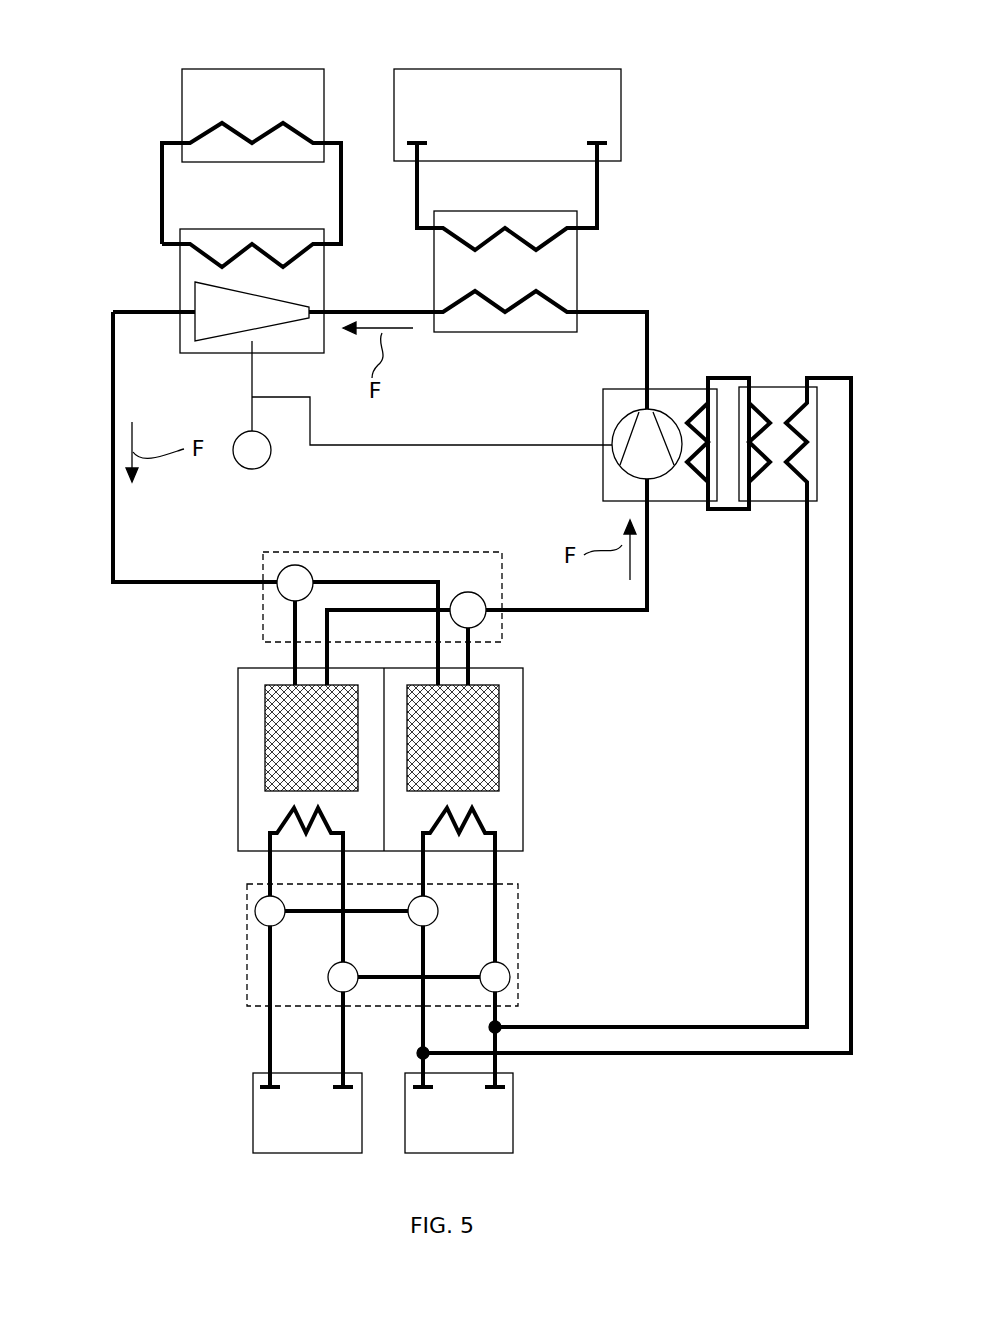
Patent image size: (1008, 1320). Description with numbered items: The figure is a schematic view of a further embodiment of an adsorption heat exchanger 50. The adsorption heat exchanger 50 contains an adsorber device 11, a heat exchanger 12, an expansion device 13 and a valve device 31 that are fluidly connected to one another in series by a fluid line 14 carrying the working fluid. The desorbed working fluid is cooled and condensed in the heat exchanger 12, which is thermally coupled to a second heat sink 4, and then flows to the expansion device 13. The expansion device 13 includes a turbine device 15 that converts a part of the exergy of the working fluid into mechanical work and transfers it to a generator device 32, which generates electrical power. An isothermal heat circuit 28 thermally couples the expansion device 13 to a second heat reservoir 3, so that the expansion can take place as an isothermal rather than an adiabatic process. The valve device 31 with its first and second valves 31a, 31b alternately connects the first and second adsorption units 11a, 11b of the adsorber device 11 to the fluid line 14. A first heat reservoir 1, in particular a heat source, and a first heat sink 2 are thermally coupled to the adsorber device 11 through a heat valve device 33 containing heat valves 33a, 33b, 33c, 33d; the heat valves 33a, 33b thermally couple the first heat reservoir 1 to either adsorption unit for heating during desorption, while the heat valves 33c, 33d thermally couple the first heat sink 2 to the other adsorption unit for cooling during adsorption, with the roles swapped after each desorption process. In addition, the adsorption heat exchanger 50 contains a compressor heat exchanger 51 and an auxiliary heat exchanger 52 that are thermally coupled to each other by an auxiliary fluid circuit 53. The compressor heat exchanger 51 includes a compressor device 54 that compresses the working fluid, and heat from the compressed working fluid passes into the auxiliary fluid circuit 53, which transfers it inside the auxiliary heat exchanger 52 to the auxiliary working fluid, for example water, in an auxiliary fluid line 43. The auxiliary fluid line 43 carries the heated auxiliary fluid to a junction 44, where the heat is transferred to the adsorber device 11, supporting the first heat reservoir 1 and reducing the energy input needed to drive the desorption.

The adsorption heat exchanger 50 is at (100, 55).
The first heat reservoir 1 is at (459, 1113).
The first heat sink 2 is at (307, 1113).
The second heat reservoir 3 is at (253, 115).
The second heat sink 4 is at (507, 115).
The isothermal heat circuit 28 is at (162, 200).
The expansion device 13 is at (180, 285).
The turbine device 15 is at (233, 327).
The generator device 32 is at (258, 468).
The heat exchanger 12 is at (578, 262).
The fluid line 14 is at (128, 586).
The compressor heat exchanger 51 is at (704, 388).
The compressor device 54 is at (665, 470).
The auxiliary fluid circuit 53 is at (738, 378).
The auxiliary heat exchanger 52 is at (757, 505).
The auxiliary fluid line 43 is at (850, 746).
The valve device 31 is at (468, 550).
The first valve 31a is at (477, 618).
The second valve 31b is at (286, 592).
The adsorber device 11 is at (524, 780).
The first adsorption unit 11a is at (500, 713).
The second adsorption unit 11b is at (280, 738).
The heat valve device 33 is at (247, 948).
The heat valve 33a is at (503, 978).
The heat valve 33b is at (430, 905).
The heat valve 33c is at (338, 983).
The heat valve 33d is at (264, 908).
The junction 44 is at (419, 1053).